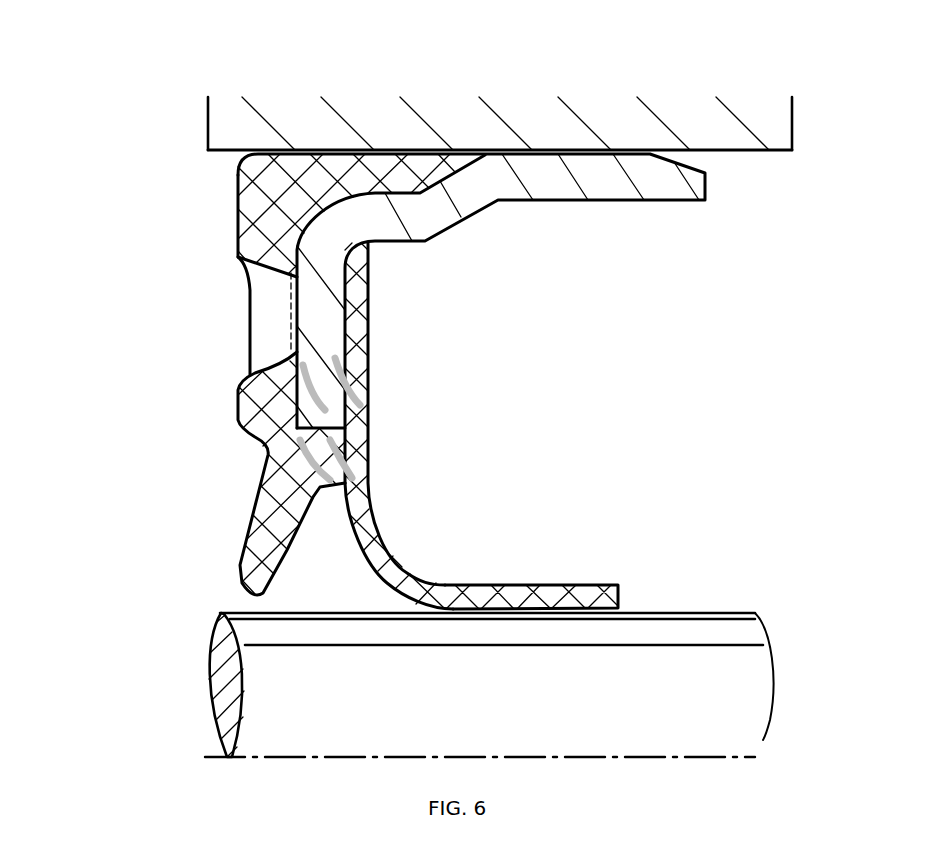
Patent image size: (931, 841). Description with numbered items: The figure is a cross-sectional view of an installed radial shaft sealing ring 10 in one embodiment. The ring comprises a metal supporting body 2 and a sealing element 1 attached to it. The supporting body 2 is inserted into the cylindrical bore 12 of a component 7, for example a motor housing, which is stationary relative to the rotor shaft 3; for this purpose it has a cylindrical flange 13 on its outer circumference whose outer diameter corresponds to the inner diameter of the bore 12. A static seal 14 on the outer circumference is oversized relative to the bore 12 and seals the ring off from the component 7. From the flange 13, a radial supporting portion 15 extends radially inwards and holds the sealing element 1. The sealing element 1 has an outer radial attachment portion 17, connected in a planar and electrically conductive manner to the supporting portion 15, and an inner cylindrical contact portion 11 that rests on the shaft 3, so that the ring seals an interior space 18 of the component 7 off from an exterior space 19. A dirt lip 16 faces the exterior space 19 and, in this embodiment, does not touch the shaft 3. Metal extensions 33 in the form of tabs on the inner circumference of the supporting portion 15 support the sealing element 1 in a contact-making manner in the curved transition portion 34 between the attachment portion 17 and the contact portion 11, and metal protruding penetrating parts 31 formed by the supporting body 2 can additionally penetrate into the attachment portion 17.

The sealing element 1 is at (437, 323).
The supporting body 2 is at (482, 213).
The rotor shaft 3 is at (733, 688).
The component 7 is at (618, 123).
The radial shaft sealing ring 10 is at (505, 382).
The contact portion 11 is at (507, 598).
The cylindrical bore 12 is at (743, 150).
The cylindrical flange 13 is at (563, 175).
The static seal 14 is at (403, 180).
The radial supporting portion 15 is at (325, 310).
The dirt lip 16 is at (268, 548).
The attachment portion 17 is at (355, 322).
The interior space 18 is at (655, 407).
The exterior space 19 is at (108, 422).
The penetrating parts 31 is at (323, 393).
The metal extensions 33 is at (323, 480).
The transition portion 34 is at (377, 560).